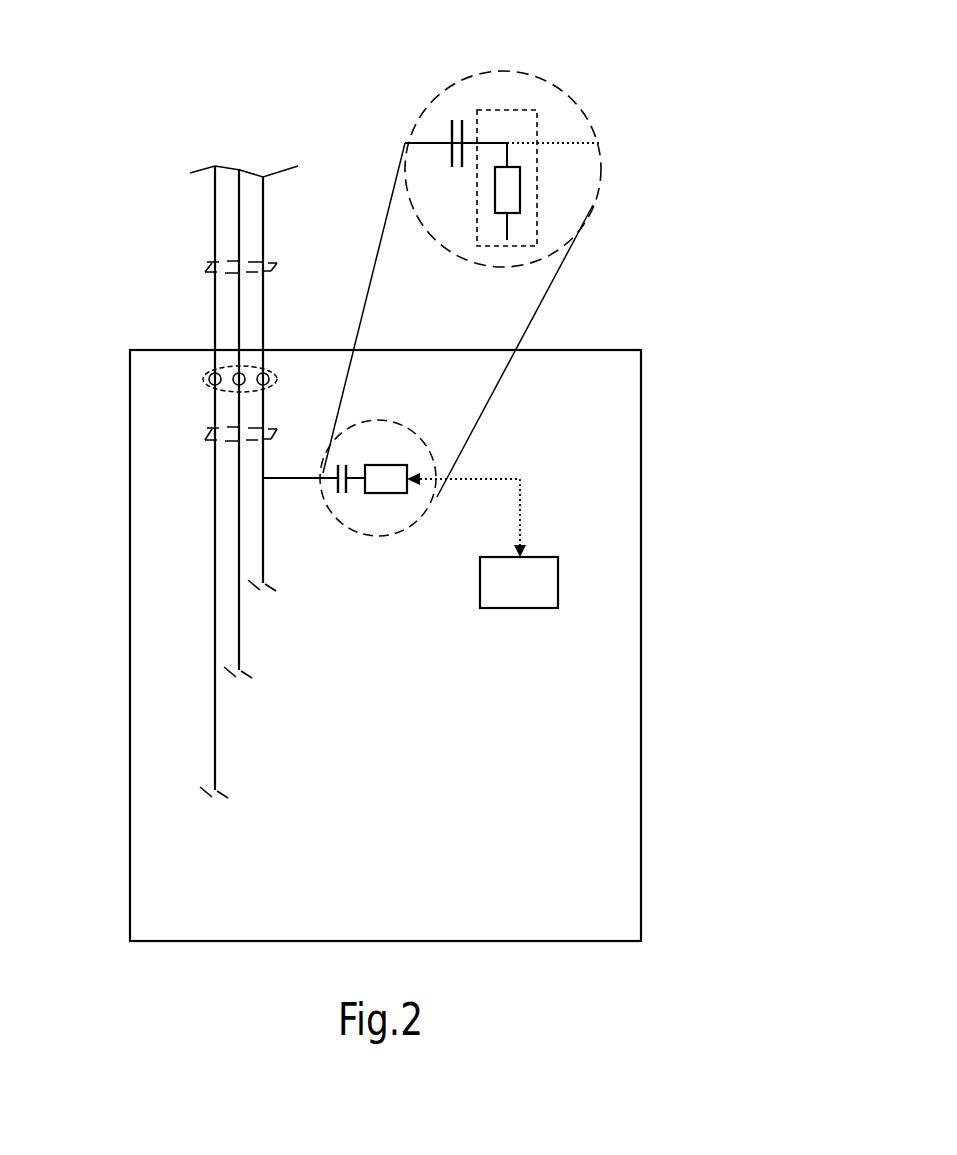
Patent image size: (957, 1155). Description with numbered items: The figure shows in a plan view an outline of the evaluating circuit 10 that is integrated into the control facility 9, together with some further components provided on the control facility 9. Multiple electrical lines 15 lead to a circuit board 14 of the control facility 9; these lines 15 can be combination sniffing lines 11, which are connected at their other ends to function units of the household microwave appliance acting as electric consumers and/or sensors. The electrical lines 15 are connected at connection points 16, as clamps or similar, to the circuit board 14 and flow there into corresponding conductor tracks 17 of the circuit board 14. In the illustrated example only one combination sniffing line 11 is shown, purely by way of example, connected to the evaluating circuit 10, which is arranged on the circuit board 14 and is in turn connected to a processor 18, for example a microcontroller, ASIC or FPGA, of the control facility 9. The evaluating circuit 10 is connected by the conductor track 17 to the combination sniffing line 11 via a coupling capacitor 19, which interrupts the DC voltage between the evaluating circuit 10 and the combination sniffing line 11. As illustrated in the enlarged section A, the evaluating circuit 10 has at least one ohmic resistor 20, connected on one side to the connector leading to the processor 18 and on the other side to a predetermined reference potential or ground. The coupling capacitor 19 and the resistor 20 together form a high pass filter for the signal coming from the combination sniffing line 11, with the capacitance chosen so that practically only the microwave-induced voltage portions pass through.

The control facility 9 is at (700, 290).
The evaluating circuit 10 is at (385, 493).
The combination sniffing line 11 is at (267, 230).
The circuit board 14 is at (128, 575).
The electrical lines 15 is at (207, 262).
The connection points 16 is at (205, 375).
The conductor tracks 17 is at (205, 430).
The processor 18 is at (502, 610).
The coupling capacitor 19 is at (340, 497).
The ohmic resistor 20 is at (520, 192).
The enlarged section A is at (603, 163).